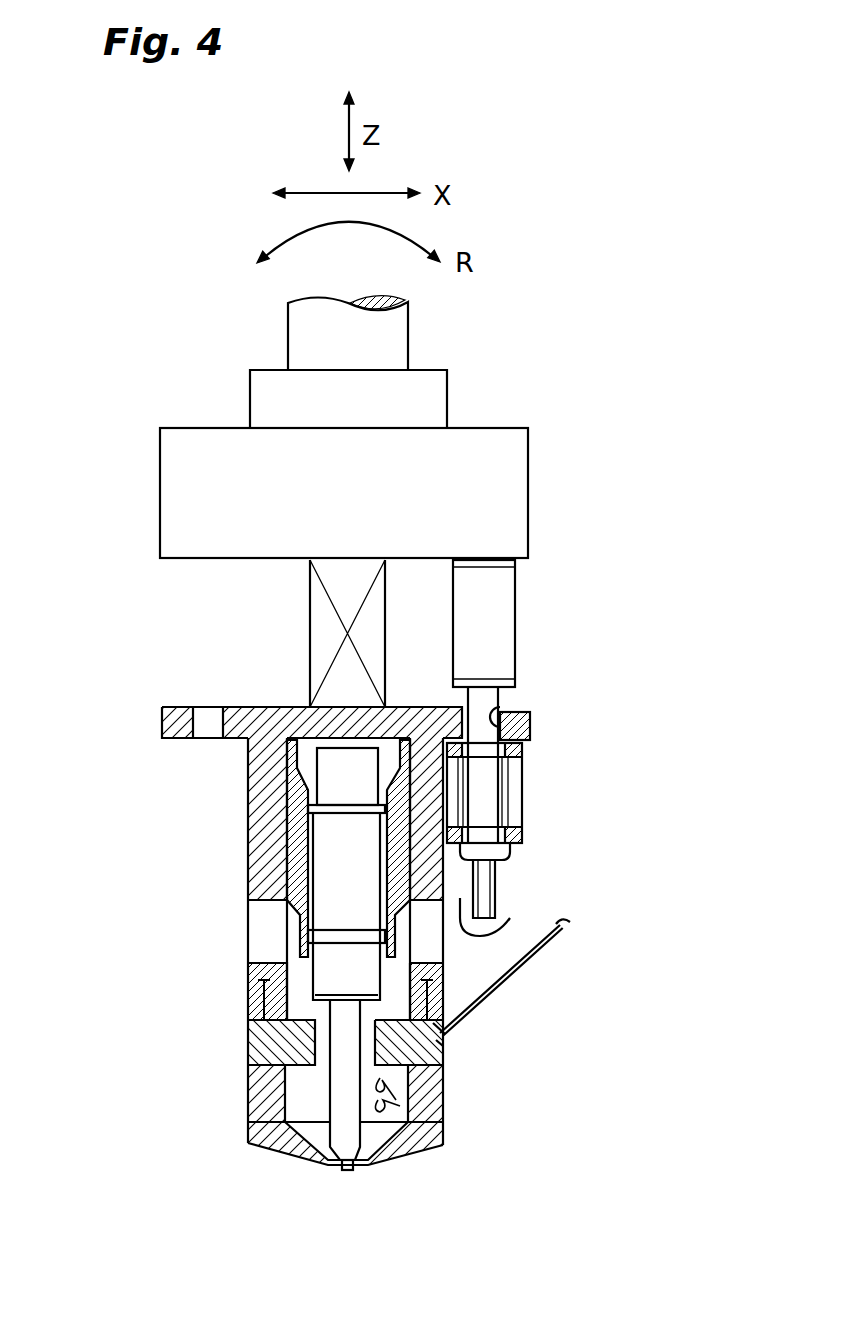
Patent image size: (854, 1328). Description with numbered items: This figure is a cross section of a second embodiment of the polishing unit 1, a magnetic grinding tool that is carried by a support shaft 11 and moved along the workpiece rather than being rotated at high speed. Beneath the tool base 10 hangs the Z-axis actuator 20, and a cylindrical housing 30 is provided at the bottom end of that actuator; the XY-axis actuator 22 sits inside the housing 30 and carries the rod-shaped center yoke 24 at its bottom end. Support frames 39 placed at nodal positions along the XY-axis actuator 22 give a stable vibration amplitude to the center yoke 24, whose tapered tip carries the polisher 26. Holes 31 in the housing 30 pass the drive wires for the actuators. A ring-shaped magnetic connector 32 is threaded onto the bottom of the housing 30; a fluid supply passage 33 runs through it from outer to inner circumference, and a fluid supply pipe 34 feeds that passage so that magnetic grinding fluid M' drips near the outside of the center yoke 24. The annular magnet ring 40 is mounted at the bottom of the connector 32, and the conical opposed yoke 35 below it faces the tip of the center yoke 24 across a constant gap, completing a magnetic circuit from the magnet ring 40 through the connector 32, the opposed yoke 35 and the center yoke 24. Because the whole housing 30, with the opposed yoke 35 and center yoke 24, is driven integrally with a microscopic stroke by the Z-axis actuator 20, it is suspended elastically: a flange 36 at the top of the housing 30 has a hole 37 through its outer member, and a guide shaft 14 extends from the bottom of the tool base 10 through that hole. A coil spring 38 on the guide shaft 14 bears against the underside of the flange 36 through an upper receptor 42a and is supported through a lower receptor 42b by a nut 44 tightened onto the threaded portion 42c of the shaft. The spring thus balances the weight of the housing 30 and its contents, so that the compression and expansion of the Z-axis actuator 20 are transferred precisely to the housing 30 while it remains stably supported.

The polishing unit 1 is at (160, 507).
The tool base 10 is at (498, 482).
The support shaft 11 is at (383, 338).
The guide shaft 14 is at (485, 698).
The Z-axis actuator 20 is at (322, 632).
The XY-axis actuator 22 is at (332, 878).
The center yoke 24 is at (343, 1097).
The polisher 26 is at (343, 1172).
The cylindrical housing 30 is at (258, 788).
The holes 31 is at (428, 940).
The connector 32 is at (262, 1018).
The fluid supply passage 33 is at (450, 1052).
The fluid supply pipe 34 is at (497, 990).
The opposed yoke 35 is at (418, 1155).
The flange 36 is at (162, 730).
The hole 37 is at (500, 698).
The coil spring 38 is at (510, 773).
The support frame 39 is at (338, 812).
The magnet ring 40 is at (442, 1087).
The upper receptor 42a is at (520, 750).
The lower receptor 42b is at (520, 830).
The threaded portion 42c is at (510, 918).
The nut 44 is at (513, 853).
The magnetic grinding fluid M' is at (496, 1145).